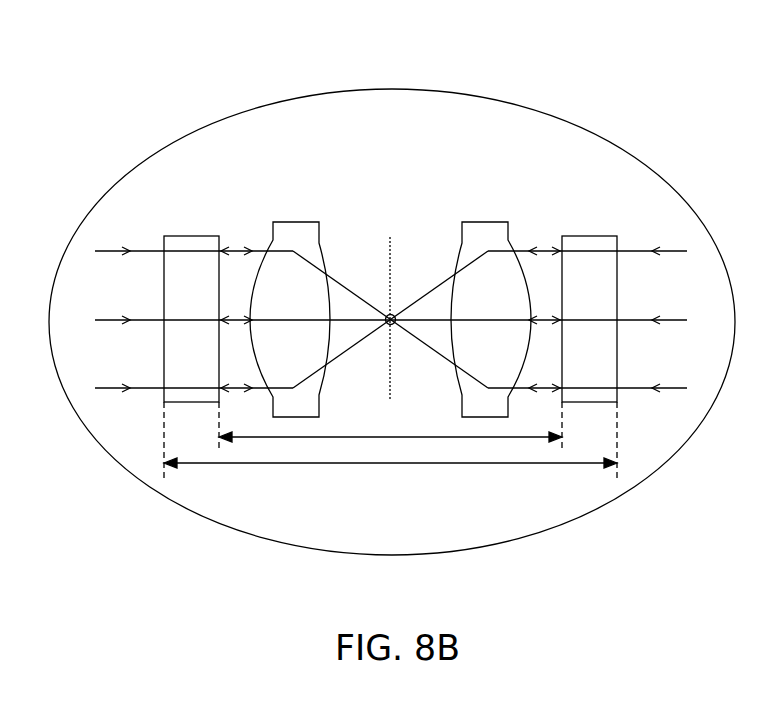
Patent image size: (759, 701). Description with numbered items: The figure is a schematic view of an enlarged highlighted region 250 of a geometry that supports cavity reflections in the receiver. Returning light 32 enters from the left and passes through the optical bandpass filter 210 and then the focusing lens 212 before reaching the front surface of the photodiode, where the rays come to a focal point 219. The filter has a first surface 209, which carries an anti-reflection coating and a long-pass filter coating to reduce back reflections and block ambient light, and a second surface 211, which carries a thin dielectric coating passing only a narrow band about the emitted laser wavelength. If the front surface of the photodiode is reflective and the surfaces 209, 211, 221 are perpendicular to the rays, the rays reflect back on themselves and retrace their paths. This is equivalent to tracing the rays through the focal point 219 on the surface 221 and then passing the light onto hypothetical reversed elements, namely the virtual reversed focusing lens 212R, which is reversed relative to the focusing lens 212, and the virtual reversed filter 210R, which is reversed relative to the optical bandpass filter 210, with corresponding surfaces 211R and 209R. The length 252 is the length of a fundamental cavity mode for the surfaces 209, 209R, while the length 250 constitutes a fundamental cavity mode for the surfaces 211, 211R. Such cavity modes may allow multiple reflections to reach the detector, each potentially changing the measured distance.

The returning light 32 is at (152, 243).
The first surface of the optical bandpass filter 209 is at (160, 270).
The reversed first surface 209R is at (617, 270).
The optical bandpass filter 210 is at (192, 236).
The virtual reversed filter 210R is at (592, 236).
The second surface of the optical bandpass filter 211 is at (217, 330).
The reversed second surface 211R is at (563, 330).
The focusing lens 212 is at (303, 222).
The virtual reversed focusing lens 212R is at (482, 222).
The focal point 219 is at (385, 325).
The surface 221 is at (392, 247).
The highlighted region / cavity mode length 250 is at (573, 121).
The cavity mode length 252 is at (400, 467).